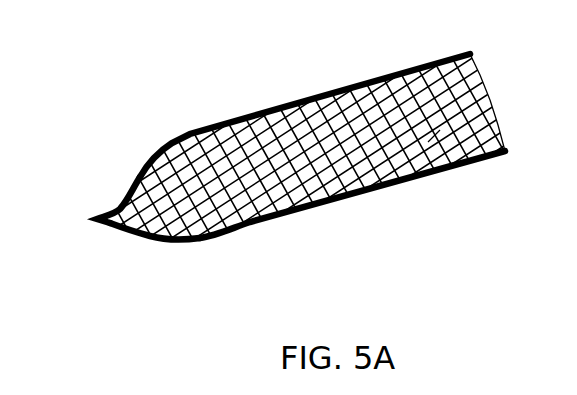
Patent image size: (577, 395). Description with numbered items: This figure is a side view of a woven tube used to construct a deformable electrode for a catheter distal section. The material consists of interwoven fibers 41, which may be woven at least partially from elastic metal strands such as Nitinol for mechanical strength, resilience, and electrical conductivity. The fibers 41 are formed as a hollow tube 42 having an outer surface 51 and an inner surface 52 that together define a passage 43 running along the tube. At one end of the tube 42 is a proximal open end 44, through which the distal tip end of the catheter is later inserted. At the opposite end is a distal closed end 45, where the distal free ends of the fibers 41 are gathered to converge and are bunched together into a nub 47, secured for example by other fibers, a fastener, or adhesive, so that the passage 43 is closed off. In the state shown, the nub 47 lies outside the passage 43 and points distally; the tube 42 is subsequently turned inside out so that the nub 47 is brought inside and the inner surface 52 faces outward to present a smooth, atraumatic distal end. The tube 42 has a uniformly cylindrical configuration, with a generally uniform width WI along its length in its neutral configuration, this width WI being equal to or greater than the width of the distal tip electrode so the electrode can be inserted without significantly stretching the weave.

The interwoven fibers 41 is at (288, 213).
The hollow tube 42 is at (406, 198).
The passage 43 is at (453, 83).
The proximal open end 44 is at (412, 66).
The distal closed end 45 is at (131, 227).
The nub 47 is at (104, 227).
The outer surface 51 is at (429, 145).
The inner surface 52 is at (470, 127).
The width W1 WI is at (192, 120).